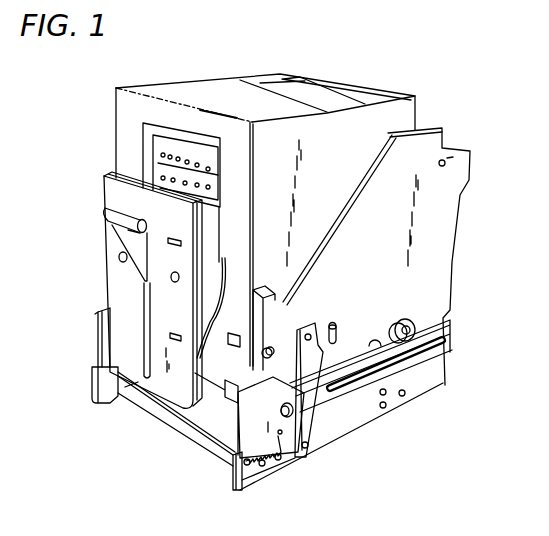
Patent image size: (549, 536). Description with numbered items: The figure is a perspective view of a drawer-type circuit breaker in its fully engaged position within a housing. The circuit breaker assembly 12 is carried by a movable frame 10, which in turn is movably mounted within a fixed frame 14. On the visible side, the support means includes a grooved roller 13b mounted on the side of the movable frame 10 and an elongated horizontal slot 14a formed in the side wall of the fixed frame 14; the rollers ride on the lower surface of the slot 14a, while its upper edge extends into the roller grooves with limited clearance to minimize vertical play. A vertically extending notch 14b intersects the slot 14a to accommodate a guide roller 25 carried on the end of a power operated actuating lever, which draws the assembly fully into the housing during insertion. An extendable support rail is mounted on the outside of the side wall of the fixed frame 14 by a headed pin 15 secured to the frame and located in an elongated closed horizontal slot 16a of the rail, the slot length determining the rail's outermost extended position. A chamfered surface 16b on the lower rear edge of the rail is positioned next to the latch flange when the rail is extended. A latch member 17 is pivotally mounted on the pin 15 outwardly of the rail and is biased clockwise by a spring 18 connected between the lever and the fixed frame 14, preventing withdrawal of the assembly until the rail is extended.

The movable frame 10 is at (413, 110).
The circuit breaker assembly 12 is at (210, 92).
The roller 13b is at (413, 320).
The fixed frame 14 is at (463, 167).
The elongated horizontal slot 14a is at (380, 349).
The vertically extending notch 14b is at (333, 322).
The headed pin 15 is at (234, 441).
The elongated closed horizontal slot 16a is at (363, 380).
The chamfered surface 16b is at (447, 358).
The latch member 17 is at (288, 428).
The spring 18 is at (268, 472).
The guide roller 25 is at (322, 362).